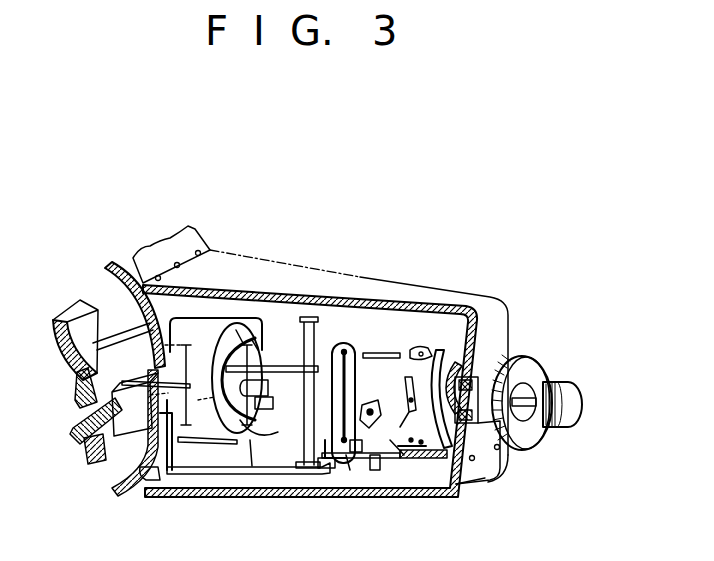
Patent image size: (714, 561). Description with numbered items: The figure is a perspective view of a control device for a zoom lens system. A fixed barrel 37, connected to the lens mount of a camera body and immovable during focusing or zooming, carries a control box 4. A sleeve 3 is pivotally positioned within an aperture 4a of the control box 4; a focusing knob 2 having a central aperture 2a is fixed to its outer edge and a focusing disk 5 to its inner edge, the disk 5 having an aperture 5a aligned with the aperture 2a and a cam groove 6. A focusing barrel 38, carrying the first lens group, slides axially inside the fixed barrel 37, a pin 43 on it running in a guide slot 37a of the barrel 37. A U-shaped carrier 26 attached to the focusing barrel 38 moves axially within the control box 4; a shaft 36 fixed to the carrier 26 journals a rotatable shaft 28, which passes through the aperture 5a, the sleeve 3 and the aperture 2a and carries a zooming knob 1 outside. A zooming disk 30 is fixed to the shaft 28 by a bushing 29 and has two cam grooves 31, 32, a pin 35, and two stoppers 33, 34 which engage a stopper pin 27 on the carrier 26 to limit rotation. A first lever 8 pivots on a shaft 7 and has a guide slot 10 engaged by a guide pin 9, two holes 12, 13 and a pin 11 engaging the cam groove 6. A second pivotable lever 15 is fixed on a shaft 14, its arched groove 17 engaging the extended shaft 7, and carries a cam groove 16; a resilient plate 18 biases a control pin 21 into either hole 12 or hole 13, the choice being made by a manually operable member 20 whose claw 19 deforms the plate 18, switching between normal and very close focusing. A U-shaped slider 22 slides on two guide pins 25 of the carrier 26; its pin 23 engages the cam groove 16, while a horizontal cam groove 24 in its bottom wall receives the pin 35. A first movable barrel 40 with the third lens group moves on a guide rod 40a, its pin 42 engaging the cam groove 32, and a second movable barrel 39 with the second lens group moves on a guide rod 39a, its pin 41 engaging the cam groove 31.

The zooming knob 1 is at (573, 419).
The focusing knob 2 is at (529, 448).
The central aperture 2a is at (532, 380).
The sleeve 3 is at (479, 379).
The control box 4 is at (459, 298).
The aperture 4a is at (492, 470).
The focusing disk 5 is at (452, 490).
The aperture 5a is at (470, 486).
The cam groove 6 is at (456, 363).
The shaft 7 is at (440, 458).
The first lever 8 is at (398, 456).
The guide pin 9 is at (436, 350).
The guide slot 10 is at (412, 351).
The pin 11 is at (410, 404).
The hole 12 is at (407, 458).
The hole 13 is at (411, 440).
The shaft 14 is at (381, 352).
The second pivotable lever 15 is at (328, 458).
The cam groove 16 is at (323, 470).
The arched groove 17 is at (356, 453).
The resilient plate 18 is at (374, 402).
The claw 19 is at (375, 472).
The manually operable member 20 is at (355, 400).
The control pin 21 is at (350, 476).
The U-shaped slider 22 is at (305, 317).
The pin 23 is at (342, 350).
The cam groove 24 is at (275, 394).
The guide pins 25 is at (301, 470).
The U-shaped carrier 26 is at (256, 348).
The stopper pin 27 is at (192, 470).
The rotatable shaft 28 is at (276, 412).
The bushing 29 is at (242, 258).
The zooming disk 30 is at (238, 476).
The cam groove 31 is at (240, 345).
The cam groove 32 is at (252, 470).
The stopper 33 is at (240, 346).
The stopper 34 is at (230, 446).
The pin 35 is at (271, 364).
The shaft 36 is at (218, 395).
The fixed barrel 37 is at (203, 231).
The guide slot 37a is at (150, 497).
The focusing barrel 38 is at (104, 266).
The second movable barrel 39 is at (52, 321).
The guide rod 39a is at (76, 388).
The first movable barrel 40 is at (92, 449).
The guide rod 40a is at (82, 440).
The pin 41 is at (156, 397).
The pin 42 is at (256, 436).
The pin 43 is at (142, 492).